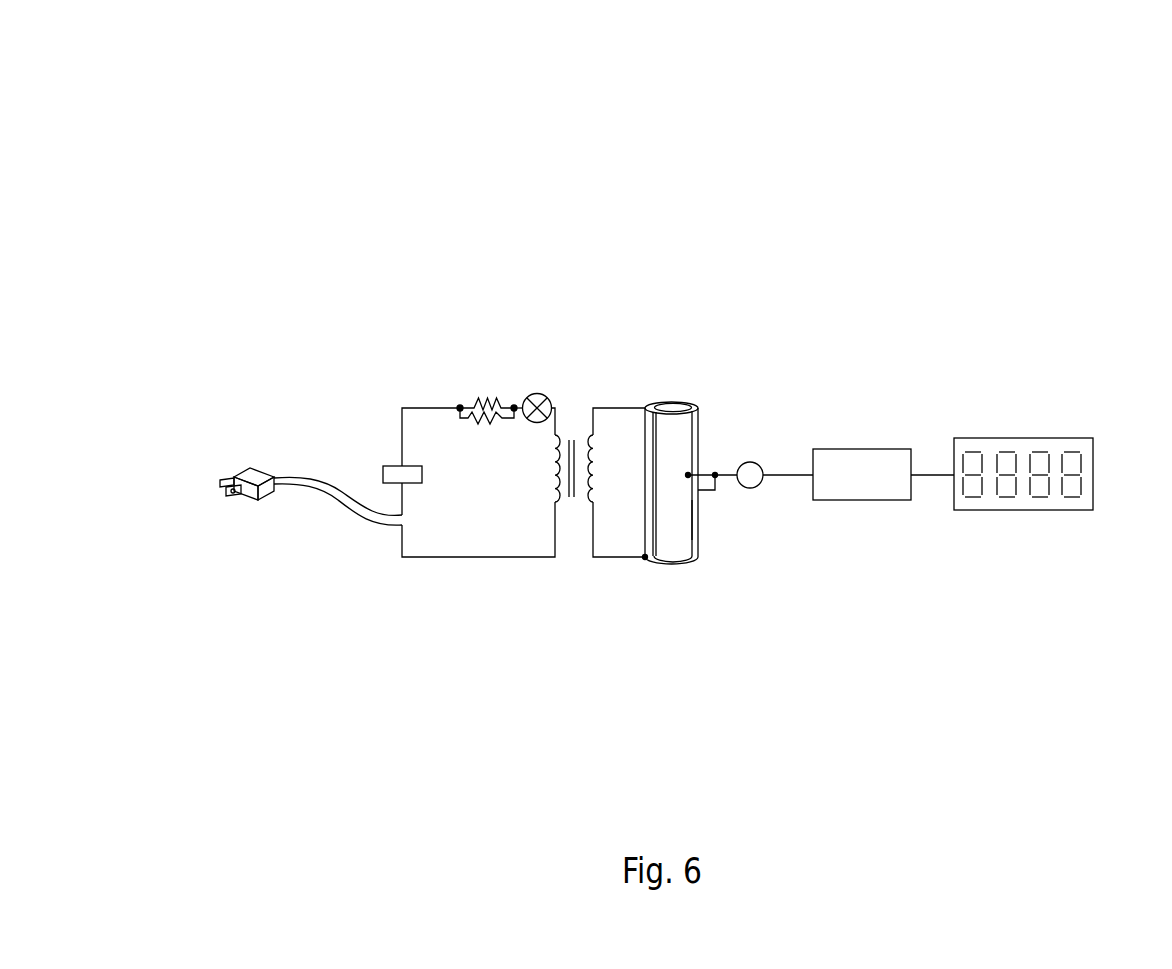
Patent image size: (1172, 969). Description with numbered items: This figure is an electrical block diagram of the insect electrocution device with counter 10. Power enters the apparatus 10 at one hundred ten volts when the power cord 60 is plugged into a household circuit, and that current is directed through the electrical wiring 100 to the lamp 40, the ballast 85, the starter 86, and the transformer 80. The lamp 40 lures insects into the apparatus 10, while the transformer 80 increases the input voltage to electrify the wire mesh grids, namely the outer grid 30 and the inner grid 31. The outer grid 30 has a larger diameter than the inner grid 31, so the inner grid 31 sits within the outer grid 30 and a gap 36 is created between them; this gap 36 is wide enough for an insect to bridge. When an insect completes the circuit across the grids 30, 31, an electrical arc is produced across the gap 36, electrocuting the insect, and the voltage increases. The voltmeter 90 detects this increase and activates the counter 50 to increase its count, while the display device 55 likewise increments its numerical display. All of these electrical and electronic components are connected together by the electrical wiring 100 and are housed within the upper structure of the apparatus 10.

The insect electrocution device with counter 10 is at (128, 121).
The electrical wiring 100 is at (421, 559).
The power cord 60 is at (279, 477).
The starter 86 is at (388, 464).
The ballast 85 is at (491, 398).
The lamp 40 is at (535, 396).
The transformer 80 is at (590, 434).
The outer grid 30 is at (700, 405).
The inner grid 31 is at (665, 409).
The gap 36 is at (695, 523).
The voltmeter 90 is at (762, 464).
The counter 50 is at (866, 448).
The display device 55 is at (1050, 437).